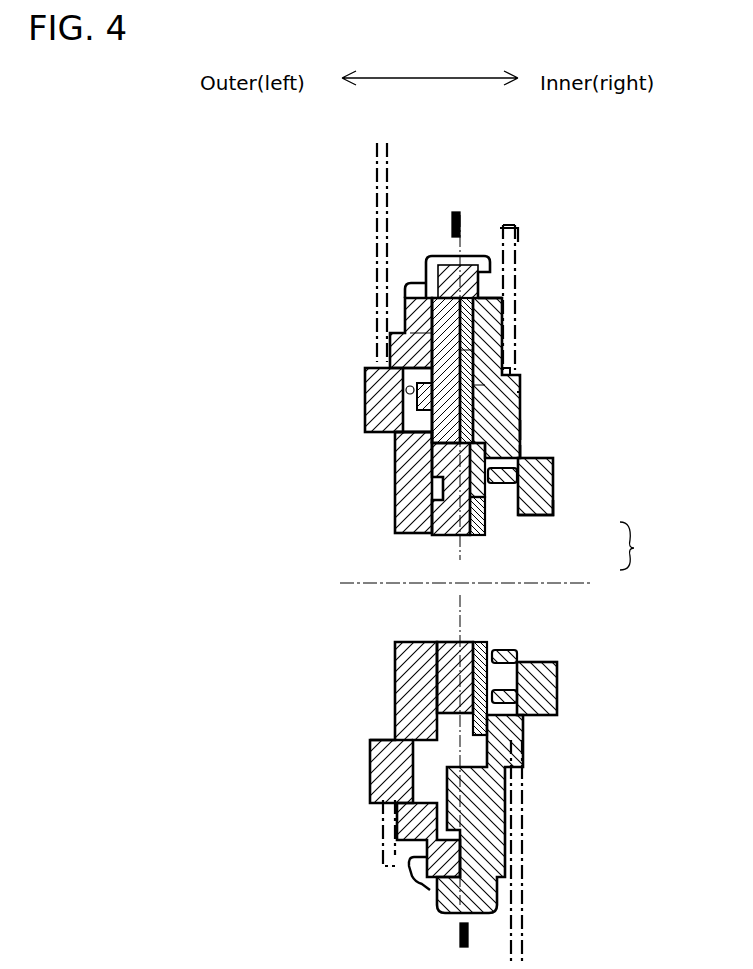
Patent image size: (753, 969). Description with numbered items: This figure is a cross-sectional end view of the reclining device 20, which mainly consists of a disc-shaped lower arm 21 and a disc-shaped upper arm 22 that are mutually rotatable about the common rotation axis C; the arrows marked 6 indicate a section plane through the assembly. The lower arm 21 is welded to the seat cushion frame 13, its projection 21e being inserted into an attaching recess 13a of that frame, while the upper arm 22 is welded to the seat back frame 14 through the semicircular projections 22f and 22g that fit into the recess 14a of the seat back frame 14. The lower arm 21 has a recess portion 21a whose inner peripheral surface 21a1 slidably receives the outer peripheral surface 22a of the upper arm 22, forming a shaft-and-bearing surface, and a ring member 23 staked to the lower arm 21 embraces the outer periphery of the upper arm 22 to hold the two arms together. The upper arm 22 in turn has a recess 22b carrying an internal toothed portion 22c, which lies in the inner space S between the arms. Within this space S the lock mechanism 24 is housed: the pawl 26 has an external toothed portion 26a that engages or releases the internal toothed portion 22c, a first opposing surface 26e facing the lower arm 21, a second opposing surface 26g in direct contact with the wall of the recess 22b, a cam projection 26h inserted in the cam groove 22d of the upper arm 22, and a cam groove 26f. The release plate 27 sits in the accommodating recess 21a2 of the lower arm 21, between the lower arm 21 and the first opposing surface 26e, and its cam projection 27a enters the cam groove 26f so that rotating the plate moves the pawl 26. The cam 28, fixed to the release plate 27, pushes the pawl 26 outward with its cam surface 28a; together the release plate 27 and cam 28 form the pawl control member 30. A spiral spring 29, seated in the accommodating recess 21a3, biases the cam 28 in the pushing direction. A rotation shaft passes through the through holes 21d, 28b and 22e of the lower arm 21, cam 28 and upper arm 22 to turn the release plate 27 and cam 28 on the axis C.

The tightening tool / marker 6 is at (438, 231).
The seat cushion frame 13 is at (520, 242).
The attaching recess 13a is at (520, 375).
The seat back frame 14 is at (370, 210).
The recess 14a is at (362, 382).
The reclining device 20 is at (588, 458).
The lower arm 21 is at (566, 485).
The recess portion 21a is at (502, 304).
The inner peripheral surface 21a1 is at (502, 297).
The accommodating recess 21a2 is at (520, 425).
The accommodating recess 21a3 is at (553, 507).
The through hole 21d is at (540, 662).
The projection 21e is at (520, 397).
The upper arm 22 is at (400, 525).
The outer peripheral surface 22a is at (428, 277).
The recess 22b is at (430, 352).
The internal toothed portion 22c is at (430, 333).
The cam groove 22d is at (395, 397).
The through hole 22e is at (410, 642).
The semicircular-shaped projection 22f is at (395, 428).
The semicircular-shaped projection 22g is at (378, 768).
The ring member 23 is at (460, 257).
The lock mechanism 24 is at (521, 449).
The pawl 26 is at (432, 430).
The external toothed portion 26a is at (473, 328).
The first opposing surface 26e is at (474, 352).
The cam groove 26f is at (486, 385).
The second opposing surface 26g is at (470, 447).
The cam projection 26h is at (400, 412).
The release plate 27 is at (478, 538).
The cam projection 27a is at (430, 405).
The cam 28 is at (486, 518).
The cam surface 28a is at (440, 500).
The through hole 28b is at (395, 566).
The spring 29 is at (518, 474).
The pawl control member 30 is at (638, 546).
The inner space S is at (432, 488).
The rotation axis C is at (474, 560).